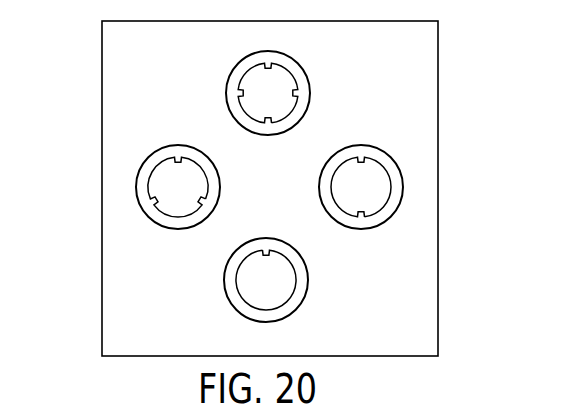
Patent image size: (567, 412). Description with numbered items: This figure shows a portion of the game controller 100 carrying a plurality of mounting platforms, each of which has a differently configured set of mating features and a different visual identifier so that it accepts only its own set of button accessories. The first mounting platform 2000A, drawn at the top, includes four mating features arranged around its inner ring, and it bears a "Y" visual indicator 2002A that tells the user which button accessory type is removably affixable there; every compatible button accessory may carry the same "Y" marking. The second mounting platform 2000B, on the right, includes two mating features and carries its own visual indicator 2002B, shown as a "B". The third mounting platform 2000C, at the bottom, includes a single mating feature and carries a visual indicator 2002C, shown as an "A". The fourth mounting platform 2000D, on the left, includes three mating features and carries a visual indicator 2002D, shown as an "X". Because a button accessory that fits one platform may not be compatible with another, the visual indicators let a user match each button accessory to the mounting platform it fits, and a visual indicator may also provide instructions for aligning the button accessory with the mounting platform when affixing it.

The game controller 100 is at (156, 46).
The first mounting platform 2000A is at (304, 72).
The visual indicator 2002A is at (281, 108).
The second mounting platform 2000B is at (398, 168).
The visual indicator 2002B is at (380, 210).
The third mounting platform 2000C is at (302, 259).
The visual indicator 2002C is at (279, 297).
The fourth mounting platform 2000D is at (148, 157).
The visual indicator 2002D is at (160, 199).